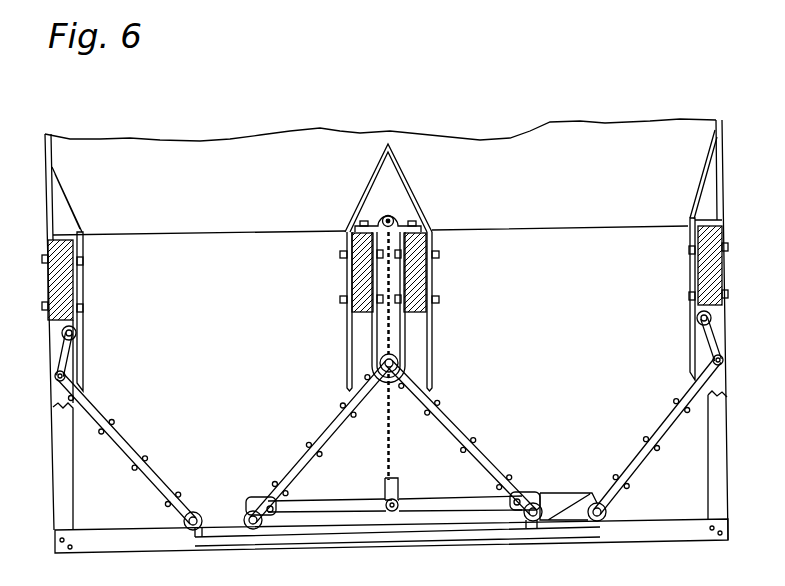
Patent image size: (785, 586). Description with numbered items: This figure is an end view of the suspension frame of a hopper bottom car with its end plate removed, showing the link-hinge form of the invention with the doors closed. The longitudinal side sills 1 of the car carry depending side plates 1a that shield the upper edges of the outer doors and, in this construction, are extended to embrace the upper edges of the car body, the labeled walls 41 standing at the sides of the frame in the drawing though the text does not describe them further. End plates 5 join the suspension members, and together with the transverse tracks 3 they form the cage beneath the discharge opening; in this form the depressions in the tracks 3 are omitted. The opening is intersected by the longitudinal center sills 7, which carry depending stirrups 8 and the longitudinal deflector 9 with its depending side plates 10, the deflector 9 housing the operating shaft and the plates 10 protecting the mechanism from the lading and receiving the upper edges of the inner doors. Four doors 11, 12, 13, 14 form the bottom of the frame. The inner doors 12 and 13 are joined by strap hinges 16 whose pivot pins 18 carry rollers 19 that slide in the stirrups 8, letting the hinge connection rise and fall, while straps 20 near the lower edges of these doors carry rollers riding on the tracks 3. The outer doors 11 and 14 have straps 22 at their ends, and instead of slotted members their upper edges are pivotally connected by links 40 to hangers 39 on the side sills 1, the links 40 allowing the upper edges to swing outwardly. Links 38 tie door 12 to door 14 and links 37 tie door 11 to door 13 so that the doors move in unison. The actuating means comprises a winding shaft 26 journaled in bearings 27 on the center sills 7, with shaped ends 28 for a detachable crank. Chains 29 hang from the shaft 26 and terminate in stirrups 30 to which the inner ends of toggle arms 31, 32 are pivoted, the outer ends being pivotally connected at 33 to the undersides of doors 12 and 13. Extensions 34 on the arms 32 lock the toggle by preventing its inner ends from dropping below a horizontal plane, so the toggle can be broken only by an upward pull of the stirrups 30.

The longitudinal side sills 1 is at (60, 272).
The depending side plates 1a is at (82, 340).
The tracks 3 is at (661, 540).
The end plates 5 is at (530, 295).
The longitudinal center sills 7 is at (360, 270).
The depending stirrups 8 is at (405, 342).
The longitudinal deflector 9 is at (366, 187).
The depending side plates 10 is at (346, 356).
The door 11 is at (128, 436).
The door 12 is at (320, 426).
The door 13 is at (470, 430).
The door 14 is at (660, 424).
The strap hinges 16 is at (318, 452).
The pivot pins 18 is at (400, 369).
The rollers 19 is at (382, 368).
The straps 20 is at (192, 531).
The straps 22 is at (130, 452).
The winding arbor or shaft 26 is at (388, 215).
The bearings 27 is at (392, 216).
The shaped shaft ends 28 is at (400, 219).
The chains or cables 29 is at (394, 428).
The stirrups 30 is at (398, 481).
The toggle arm 31 is at (317, 500).
The toggle arm 32 is at (460, 499).
The pivotal connections 33 is at (271, 514).
The extensions or overlapping portions 34 is at (384, 499).
The links 37 is at (377, 534).
The links 38 is at (570, 492).
The hangers 39 is at (62, 333).
The links 40 is at (62, 356).
The tank side walls 41 is at (46, 206).